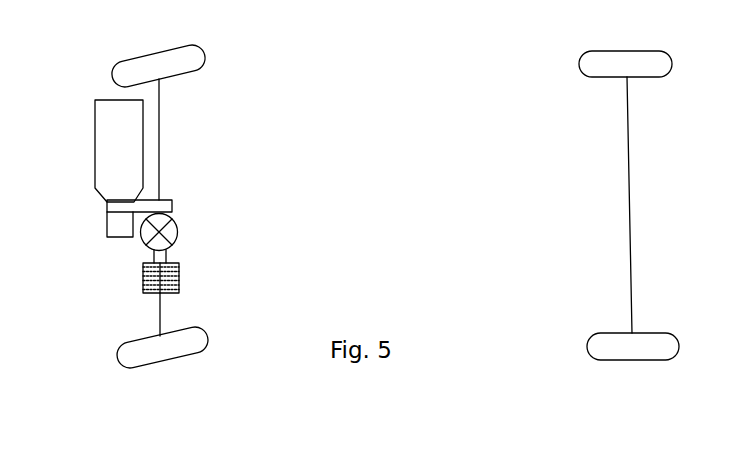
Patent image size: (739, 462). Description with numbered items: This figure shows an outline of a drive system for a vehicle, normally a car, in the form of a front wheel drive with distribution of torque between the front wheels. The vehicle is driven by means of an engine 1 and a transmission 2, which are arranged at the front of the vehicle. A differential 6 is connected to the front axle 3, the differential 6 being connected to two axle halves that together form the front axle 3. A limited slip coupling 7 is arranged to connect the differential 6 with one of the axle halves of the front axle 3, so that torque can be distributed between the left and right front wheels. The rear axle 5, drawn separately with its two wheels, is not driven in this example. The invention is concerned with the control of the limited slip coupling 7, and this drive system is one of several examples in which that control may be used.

The engine 1 is at (105, 144).
The transmission 2 is at (108, 227).
The front axle 3 is at (162, 150).
The rear axle 5 is at (627, 195).
The differential 6 is at (175, 233).
The limited slip coupling 7 is at (180, 282).